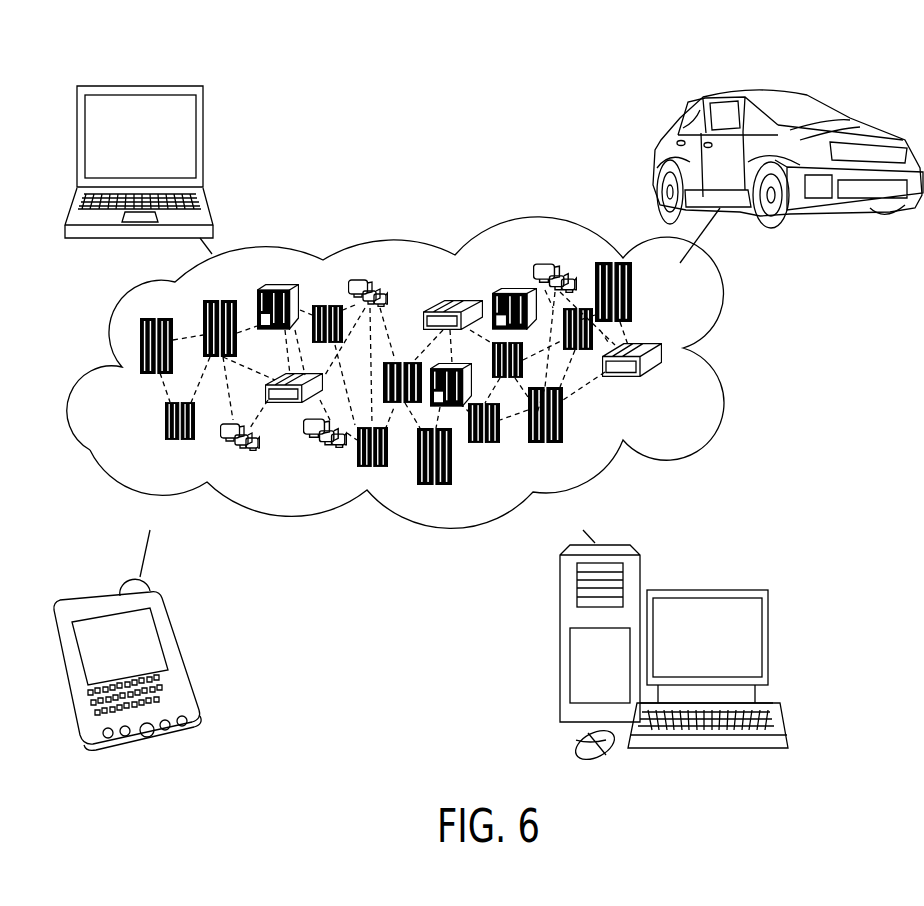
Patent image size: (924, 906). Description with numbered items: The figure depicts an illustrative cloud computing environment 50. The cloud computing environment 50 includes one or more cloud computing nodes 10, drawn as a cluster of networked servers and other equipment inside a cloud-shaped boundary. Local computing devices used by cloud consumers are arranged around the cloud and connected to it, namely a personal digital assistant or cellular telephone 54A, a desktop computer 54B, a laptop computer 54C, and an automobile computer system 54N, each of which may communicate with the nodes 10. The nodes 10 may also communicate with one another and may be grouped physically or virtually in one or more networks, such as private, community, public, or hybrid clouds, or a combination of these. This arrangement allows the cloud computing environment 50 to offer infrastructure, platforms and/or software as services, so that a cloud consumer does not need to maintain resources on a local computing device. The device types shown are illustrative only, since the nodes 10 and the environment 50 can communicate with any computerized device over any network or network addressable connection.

The cloud computing nodes 10 is at (675, 398).
The cloud computing environment 50 is at (723, 300).
The personal digital assistant or cellular telephone 54A is at (173, 637).
The desktop computer 54B is at (770, 637).
The laptop computer 54C is at (202, 142).
The automobile computer system 54N is at (840, 105).